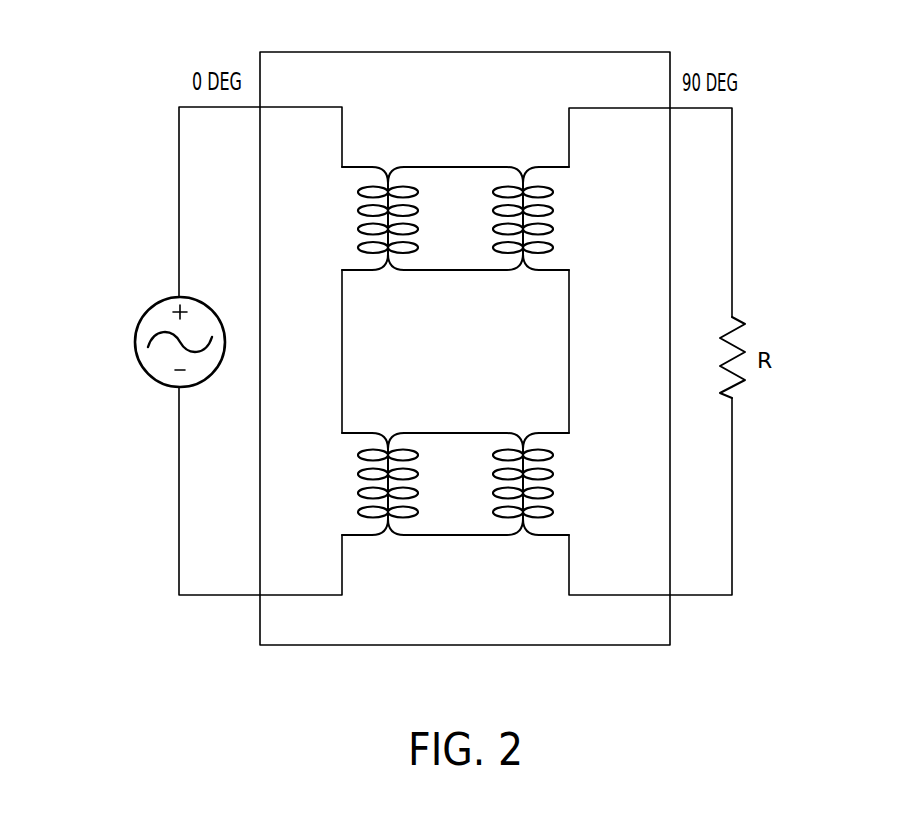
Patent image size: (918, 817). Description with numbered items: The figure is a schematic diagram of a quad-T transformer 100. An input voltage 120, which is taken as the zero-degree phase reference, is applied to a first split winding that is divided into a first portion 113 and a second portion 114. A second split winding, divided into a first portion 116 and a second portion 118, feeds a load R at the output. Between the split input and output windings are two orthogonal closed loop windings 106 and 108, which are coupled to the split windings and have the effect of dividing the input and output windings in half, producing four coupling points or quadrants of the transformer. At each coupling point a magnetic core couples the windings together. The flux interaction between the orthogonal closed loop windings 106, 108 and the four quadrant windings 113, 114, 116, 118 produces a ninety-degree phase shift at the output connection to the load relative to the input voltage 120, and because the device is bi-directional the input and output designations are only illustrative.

The quad-T transformer 100 is at (480, 52).
The orthogonal closed loop winding 106 is at (472, 270).
The orthogonal closed loop winding 108 is at (470, 535).
The first portion of first split winding 113 is at (358, 210).
The second portion of first split winding 114 is at (358, 493).
The first portion of second split winding 116 is at (554, 210).
The second portion of second split winding 118 is at (554, 493).
The input voltage 120 is at (135, 340).